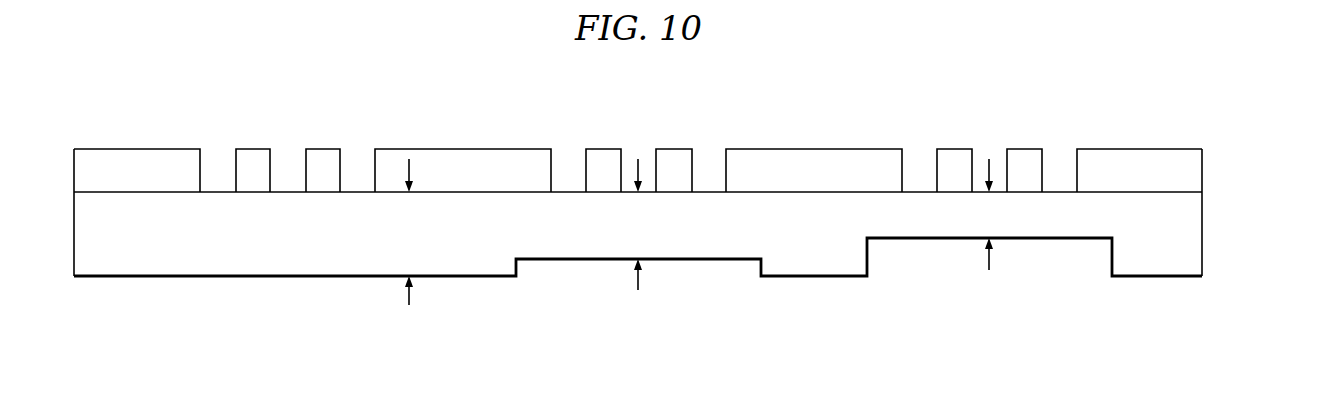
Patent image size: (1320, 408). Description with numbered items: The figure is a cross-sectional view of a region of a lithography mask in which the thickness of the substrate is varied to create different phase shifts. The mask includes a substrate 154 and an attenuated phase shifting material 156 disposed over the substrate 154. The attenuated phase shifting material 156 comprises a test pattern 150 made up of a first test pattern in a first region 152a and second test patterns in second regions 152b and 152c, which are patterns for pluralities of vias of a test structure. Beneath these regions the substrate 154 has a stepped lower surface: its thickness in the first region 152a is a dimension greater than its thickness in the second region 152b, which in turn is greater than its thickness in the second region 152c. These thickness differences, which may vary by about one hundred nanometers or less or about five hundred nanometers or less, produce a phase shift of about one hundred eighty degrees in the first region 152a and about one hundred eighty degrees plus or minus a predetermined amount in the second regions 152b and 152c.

The test pattern 150 is at (437, 88).
The first region 152a is at (269, 118).
The second region 152b is at (619, 117).
The second region 152c is at (1008, 118).
The substrate 154 is at (1202, 225).
The attenuated phase shifting material 156 is at (1202, 169).